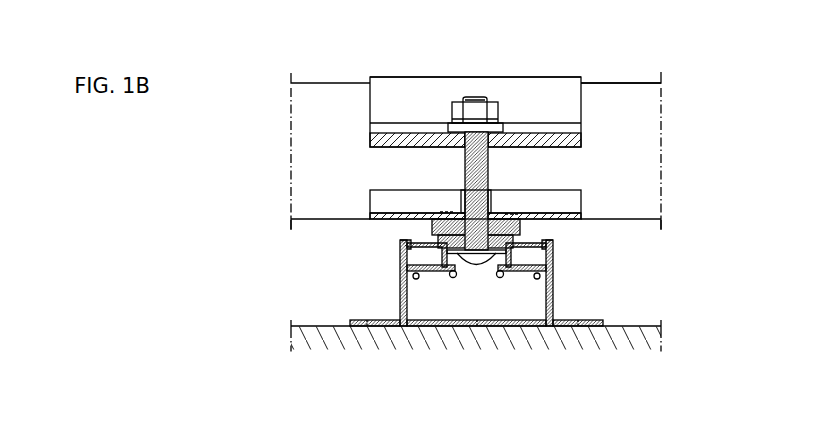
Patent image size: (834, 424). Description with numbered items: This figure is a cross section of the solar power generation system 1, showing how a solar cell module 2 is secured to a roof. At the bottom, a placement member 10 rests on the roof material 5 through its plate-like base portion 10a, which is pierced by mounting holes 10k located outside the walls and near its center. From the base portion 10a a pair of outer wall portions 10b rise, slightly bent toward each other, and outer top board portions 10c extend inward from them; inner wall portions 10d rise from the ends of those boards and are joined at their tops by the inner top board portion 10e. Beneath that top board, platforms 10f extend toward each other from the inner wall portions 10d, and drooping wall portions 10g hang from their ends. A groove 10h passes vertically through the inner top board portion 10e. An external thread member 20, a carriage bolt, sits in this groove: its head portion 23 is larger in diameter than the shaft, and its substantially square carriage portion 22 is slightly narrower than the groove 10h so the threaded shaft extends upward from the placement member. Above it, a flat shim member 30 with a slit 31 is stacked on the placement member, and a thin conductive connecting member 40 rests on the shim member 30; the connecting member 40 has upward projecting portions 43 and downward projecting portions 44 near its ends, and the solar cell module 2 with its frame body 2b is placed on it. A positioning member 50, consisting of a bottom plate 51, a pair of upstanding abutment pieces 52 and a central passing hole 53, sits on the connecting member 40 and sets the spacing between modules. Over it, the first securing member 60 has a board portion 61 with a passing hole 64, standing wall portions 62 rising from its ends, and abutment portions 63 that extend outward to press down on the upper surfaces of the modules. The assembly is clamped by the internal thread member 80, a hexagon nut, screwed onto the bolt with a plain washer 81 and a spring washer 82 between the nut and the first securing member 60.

The solar power generation system 1 is at (735, 56).
The solar cell module 2 is at (623, 66).
The frame body 2b is at (605, 97).
The roof material 5 is at (627, 330).
The placement member 10 is at (476, 312).
The base portion 10a is at (348, 320).
The outer wall portion 10b is at (400, 300).
The outer top board portion 10c is at (420, 327).
The inner wall portion 10d is at (403, 270).
The inner top board portion 10e is at (550, 253).
The platform 10f is at (448, 262).
The drooping wall portion 10g is at (548, 288).
The groove 10h is at (468, 257).
The mounting hole 10k is at (367, 327).
The external thread member 20 is at (472, 172).
The carriage portion 22 is at (433, 243).
The head portion 23 is at (487, 258).
The shim member 30 is at (477, 233).
The slit 31 is at (497, 203).
The connecting member 40 is at (503, 193).
The upward projecting portion 43 is at (447, 212).
The downward projecting portion 44 is at (428, 230).
The positioning member 50 is at (443, 188).
The bottom plate 51 is at (370, 217).
The abutment piece 52 is at (382, 198).
The passing hole 53 is at (472, 202).
The first securing member 60 is at (448, 80).
The board portion 61 is at (370, 138).
The standing wall portion 62 is at (380, 100).
The abutment portion 63 is at (420, 75).
The passing hole 64 is at (467, 133).
The internal thread member 80 is at (490, 100).
The plain washer 81 is at (503, 128).
The spring washer 82 is at (497, 124).